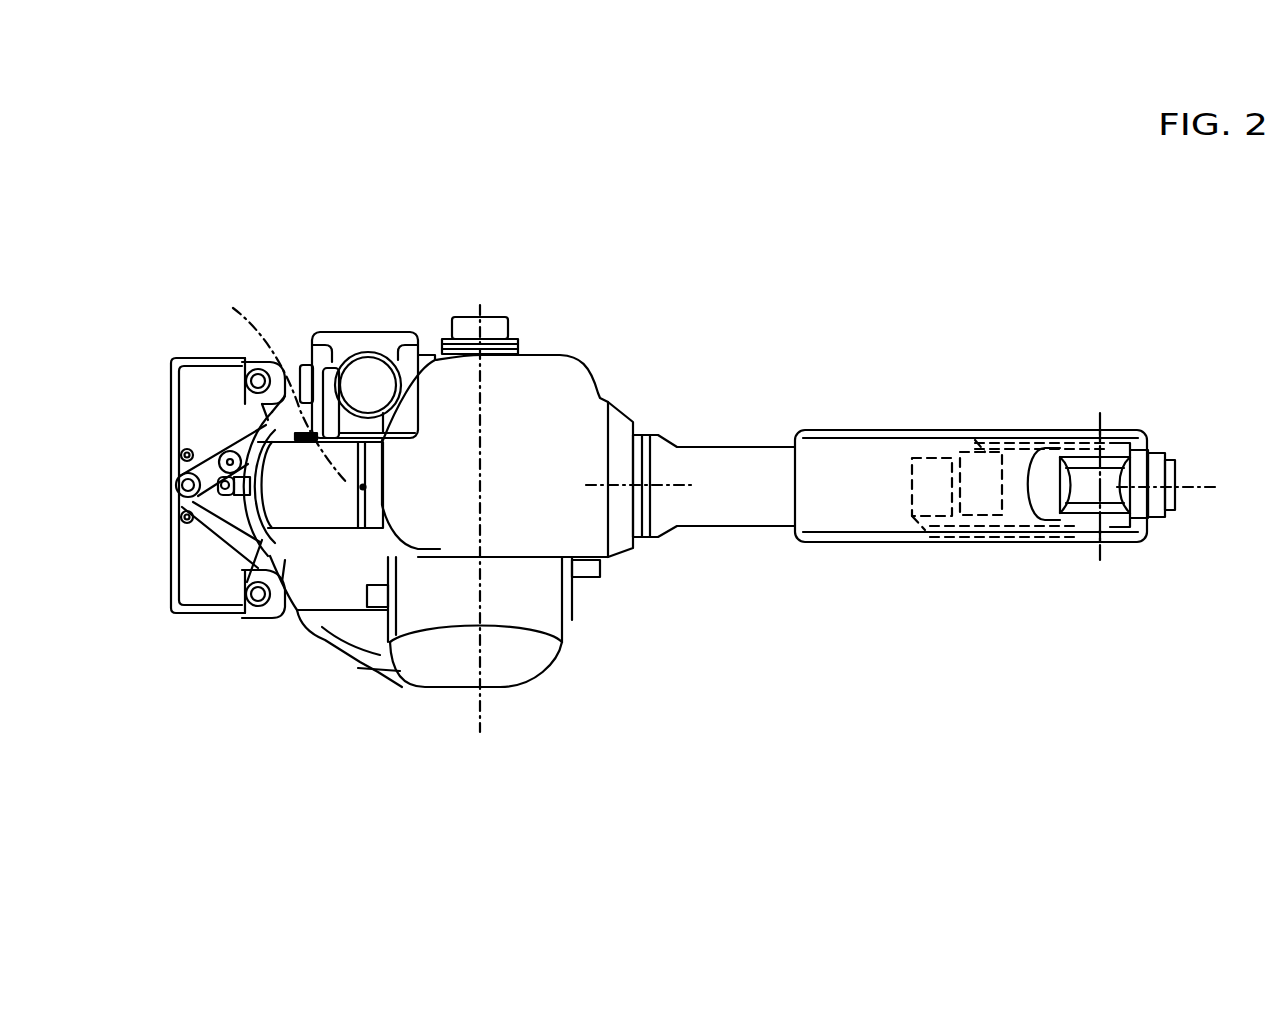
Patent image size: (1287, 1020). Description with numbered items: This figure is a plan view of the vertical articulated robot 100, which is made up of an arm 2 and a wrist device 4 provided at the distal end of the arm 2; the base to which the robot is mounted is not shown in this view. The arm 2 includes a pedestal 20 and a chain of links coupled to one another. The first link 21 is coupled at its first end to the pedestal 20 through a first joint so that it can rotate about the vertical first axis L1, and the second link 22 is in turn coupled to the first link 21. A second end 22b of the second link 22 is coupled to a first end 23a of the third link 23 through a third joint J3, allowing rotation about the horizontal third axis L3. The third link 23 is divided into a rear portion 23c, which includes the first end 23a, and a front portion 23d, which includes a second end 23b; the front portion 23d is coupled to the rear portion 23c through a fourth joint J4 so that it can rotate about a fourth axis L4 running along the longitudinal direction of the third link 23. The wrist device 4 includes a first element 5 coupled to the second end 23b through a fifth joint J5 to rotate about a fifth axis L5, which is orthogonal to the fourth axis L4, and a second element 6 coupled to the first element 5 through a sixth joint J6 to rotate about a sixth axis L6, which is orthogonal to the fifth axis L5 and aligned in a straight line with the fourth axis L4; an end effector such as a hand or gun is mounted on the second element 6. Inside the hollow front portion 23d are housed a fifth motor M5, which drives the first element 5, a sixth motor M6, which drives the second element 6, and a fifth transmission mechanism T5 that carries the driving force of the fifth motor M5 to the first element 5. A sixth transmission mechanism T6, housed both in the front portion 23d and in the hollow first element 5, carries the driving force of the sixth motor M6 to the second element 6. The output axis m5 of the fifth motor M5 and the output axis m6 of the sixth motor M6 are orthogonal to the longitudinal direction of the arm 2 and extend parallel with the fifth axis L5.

The vertical articulated robot 100 is at (318, 236).
The arm 2 is at (822, 368).
The wrist device 4 is at (1158, 550).
The first element 5 is at (1047, 536).
The second element 6 is at (1180, 510).
The pedestal 20 is at (212, 616).
The first link 21 is at (313, 637).
The second link 22 is at (453, 690).
The second end of the second link 22b is at (565, 643).
The third link 23 is at (699, 389).
The first end of the third link 23a is at (554, 355).
The second end of the third link 23b is at (1118, 430).
The rear portion 23c is at (622, 412).
The front portion 23d is at (675, 438).
The first axis L1 is at (275, 391).
The third axis L3 is at (483, 633).
The fourth axis L4 is at (689, 484).
The fifth axis L5 is at (1098, 560).
The sixth axis L6 is at (1196, 480).
The third joint J3 is at (590, 598).
The fourth joint J4 is at (662, 495).
The fifth joint J5 is at (1083, 424).
The sixth joint J6 is at (1170, 445).
The fifth motor M5 is at (896, 548).
The output axis of the fifth motor m5 is at (918, 545).
The fifth transmission mechanism T5 is at (986, 541).
The sixth motor M6 is at (956, 438).
The output axis of the sixth motor m6 is at (970, 440).
The sixth transmission mechanism T6 is at (1043, 440).